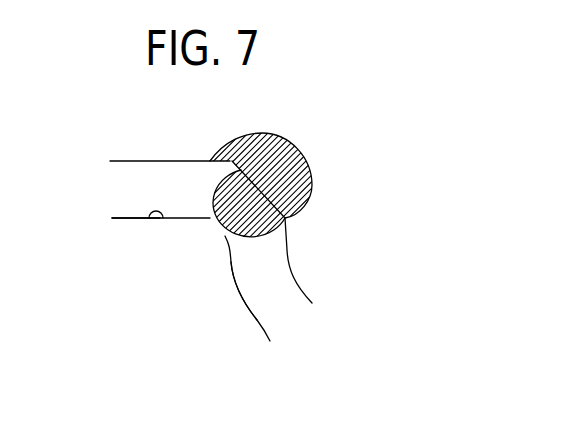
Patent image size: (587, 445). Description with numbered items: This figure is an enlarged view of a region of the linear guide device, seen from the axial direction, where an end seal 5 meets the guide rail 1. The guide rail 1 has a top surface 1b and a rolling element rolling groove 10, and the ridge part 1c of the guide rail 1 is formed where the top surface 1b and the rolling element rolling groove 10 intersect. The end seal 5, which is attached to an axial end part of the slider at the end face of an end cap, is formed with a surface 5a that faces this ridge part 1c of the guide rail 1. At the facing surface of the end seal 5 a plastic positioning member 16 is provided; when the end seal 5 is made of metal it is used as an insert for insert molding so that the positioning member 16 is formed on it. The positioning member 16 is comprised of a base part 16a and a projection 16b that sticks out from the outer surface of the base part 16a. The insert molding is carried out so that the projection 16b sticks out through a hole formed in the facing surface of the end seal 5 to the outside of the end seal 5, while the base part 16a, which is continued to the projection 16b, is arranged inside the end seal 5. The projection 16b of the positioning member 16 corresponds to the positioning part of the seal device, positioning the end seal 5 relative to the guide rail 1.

The guide rail 1 is at (112, 239).
The top surface 1b is at (163, 218).
The ridge part 1c is at (210, 216).
The end seal 5 is at (335, 262).
The surface 5a is at (232, 162).
The rolling element rolling groove 10 is at (246, 297).
The positioning member 16 is at (283, 189).
The base part 16a is at (297, 147).
The projection 16b is at (247, 236).